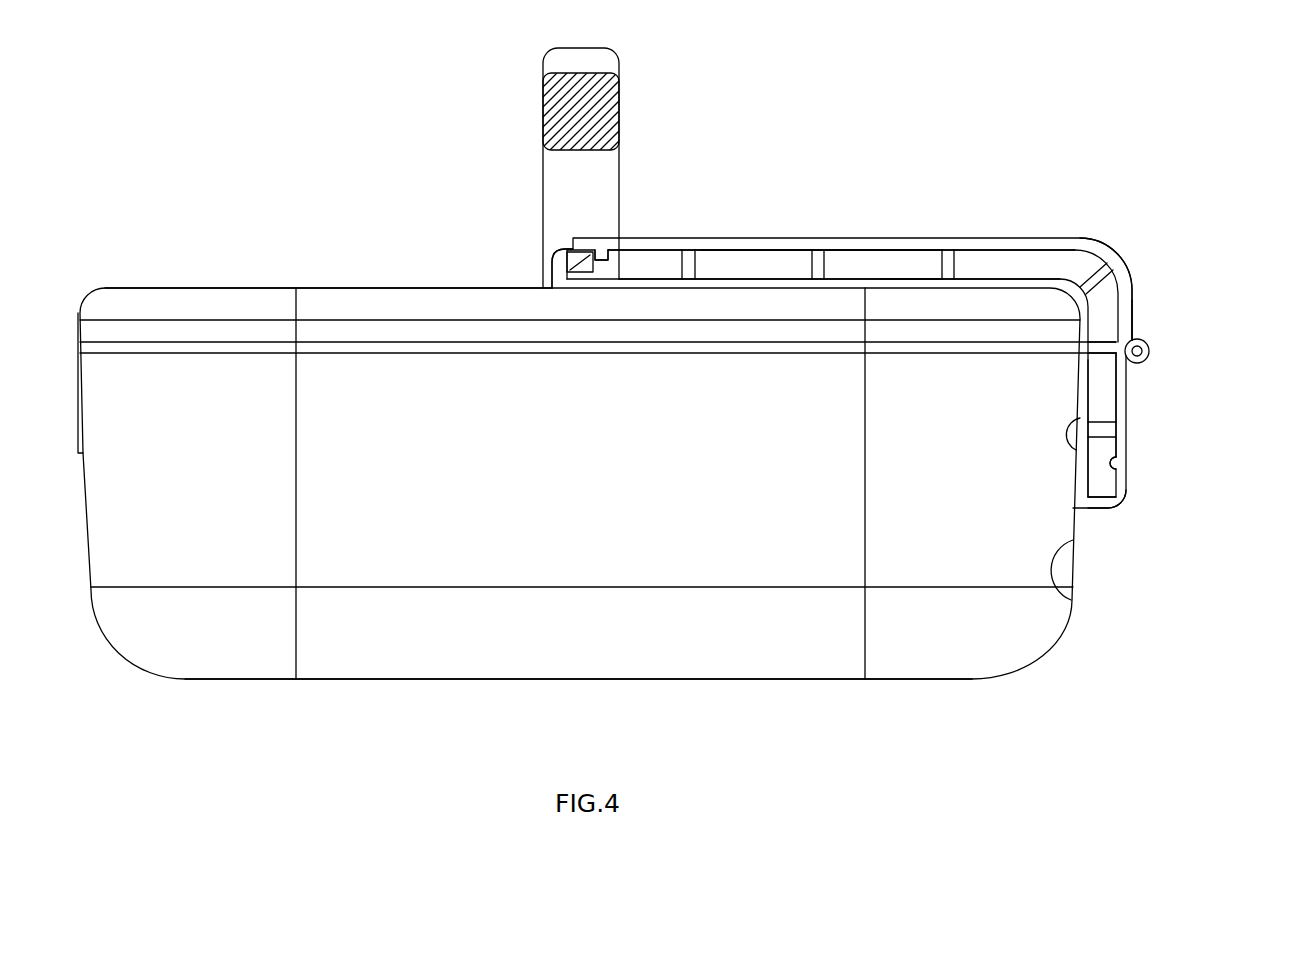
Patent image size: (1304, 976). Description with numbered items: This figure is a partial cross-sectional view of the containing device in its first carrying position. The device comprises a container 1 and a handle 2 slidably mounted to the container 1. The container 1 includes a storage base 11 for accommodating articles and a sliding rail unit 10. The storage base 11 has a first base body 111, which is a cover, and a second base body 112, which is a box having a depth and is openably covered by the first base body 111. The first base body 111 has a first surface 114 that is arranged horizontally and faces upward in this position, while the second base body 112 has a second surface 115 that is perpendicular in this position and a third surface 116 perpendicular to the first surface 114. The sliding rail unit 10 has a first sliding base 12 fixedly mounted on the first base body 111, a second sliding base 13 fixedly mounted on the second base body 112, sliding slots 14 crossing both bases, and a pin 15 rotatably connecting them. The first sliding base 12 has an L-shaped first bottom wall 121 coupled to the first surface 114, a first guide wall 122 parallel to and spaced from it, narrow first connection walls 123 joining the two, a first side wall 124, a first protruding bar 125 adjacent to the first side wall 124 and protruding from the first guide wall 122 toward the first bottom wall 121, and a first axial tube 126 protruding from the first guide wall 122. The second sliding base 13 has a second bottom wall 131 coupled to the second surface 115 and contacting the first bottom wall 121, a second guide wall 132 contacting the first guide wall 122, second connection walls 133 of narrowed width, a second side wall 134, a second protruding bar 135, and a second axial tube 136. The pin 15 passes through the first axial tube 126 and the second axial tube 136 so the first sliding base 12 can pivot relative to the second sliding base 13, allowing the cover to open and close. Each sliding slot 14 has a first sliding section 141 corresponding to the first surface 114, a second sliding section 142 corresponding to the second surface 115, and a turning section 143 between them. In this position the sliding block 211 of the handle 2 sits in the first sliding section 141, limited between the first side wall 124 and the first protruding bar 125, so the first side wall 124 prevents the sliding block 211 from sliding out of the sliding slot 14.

The container 1 is at (1163, 322).
The handle 2 is at (592, 97).
The sliding rail unit 10 is at (998, 225).
The storage base 11 is at (1084, 567).
The first sliding base 12 is at (846, 234).
The second sliding base 13 is at (1130, 431).
The sliding slot 14 is at (1011, 270).
The pin 15 is at (1146, 350).
The first base body 111 is at (205, 310).
The second base body 112 is at (800, 645).
The first surface 114 is at (356, 285).
The second surface 115 is at (1062, 590).
The third surface 116 is at (640, 665).
The first bottom wall 121 is at (690, 265).
The first guide wall 122 is at (793, 248).
The first connection wall 123 is at (749, 284).
The first side wall 124 is at (557, 266).
The first protruding bar 125 is at (601, 256).
The first axial tube 126 is at (1138, 338).
The second axial tube 136 is at (1181, 280).
The second bottom wall 131 is at (1076, 451).
The second guide wall 132 is at (1120, 442).
The second connection wall 133 is at (1100, 363).
The second side wall 134 is at (1093, 505).
The second protruding bar 135 is at (1114, 463).
The first sliding section 141 is at (906, 262).
The second sliding section 142 is at (1102, 388).
The turning section 143 is at (1056, 264).
The sliding block 211 is at (576, 260).